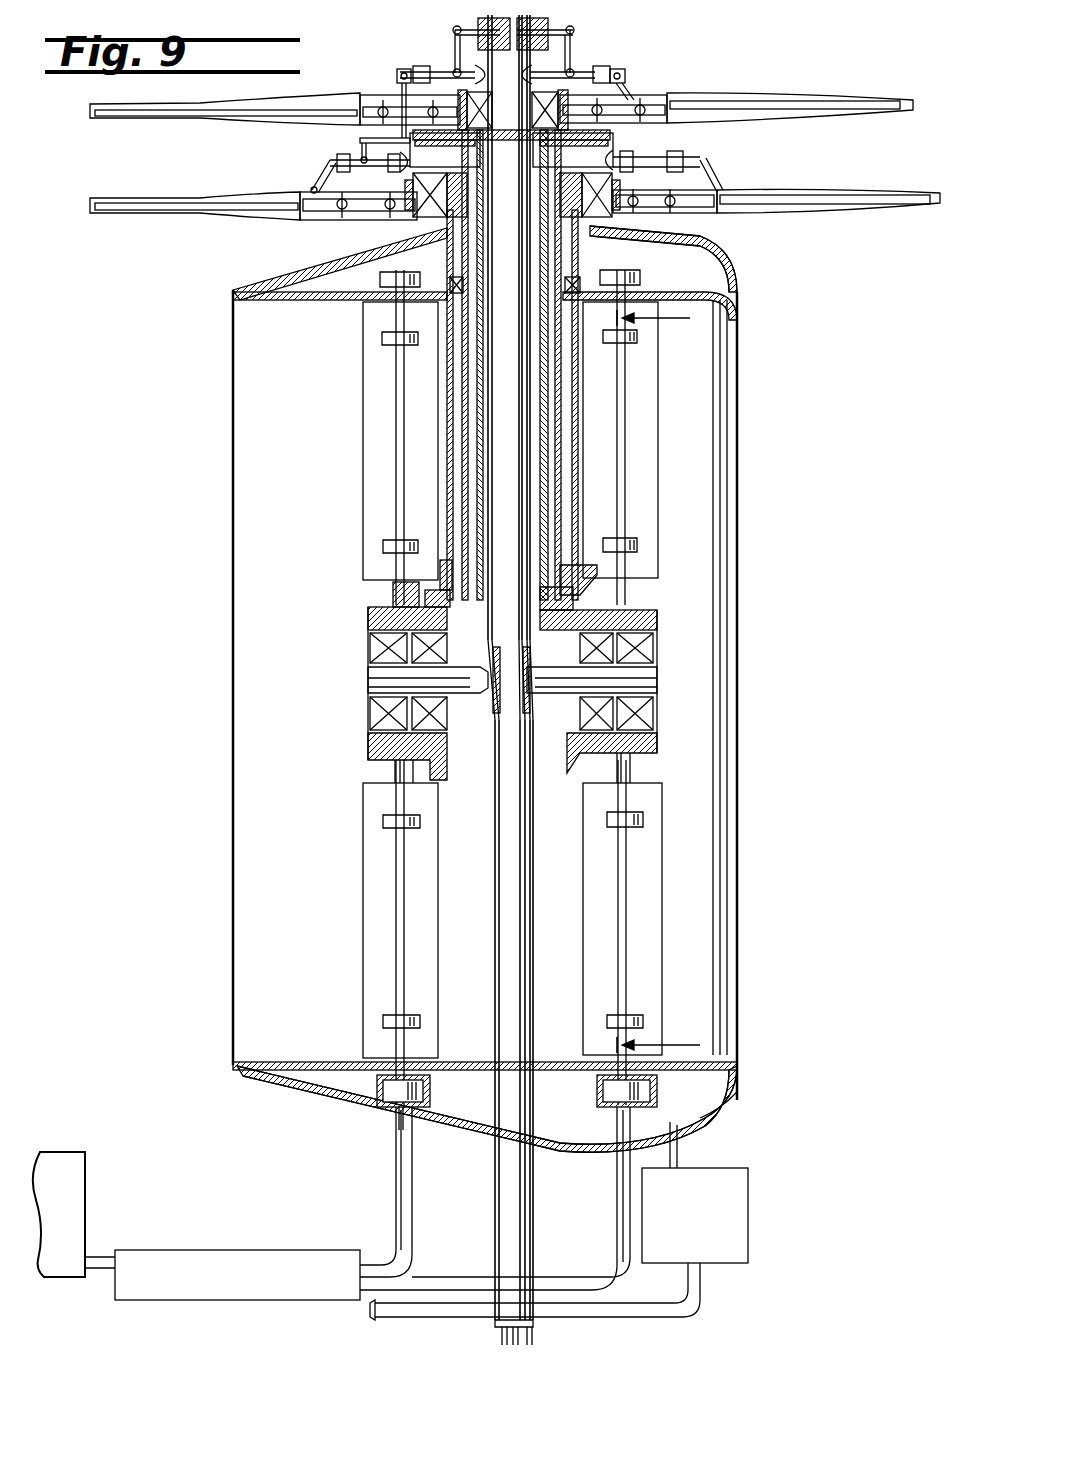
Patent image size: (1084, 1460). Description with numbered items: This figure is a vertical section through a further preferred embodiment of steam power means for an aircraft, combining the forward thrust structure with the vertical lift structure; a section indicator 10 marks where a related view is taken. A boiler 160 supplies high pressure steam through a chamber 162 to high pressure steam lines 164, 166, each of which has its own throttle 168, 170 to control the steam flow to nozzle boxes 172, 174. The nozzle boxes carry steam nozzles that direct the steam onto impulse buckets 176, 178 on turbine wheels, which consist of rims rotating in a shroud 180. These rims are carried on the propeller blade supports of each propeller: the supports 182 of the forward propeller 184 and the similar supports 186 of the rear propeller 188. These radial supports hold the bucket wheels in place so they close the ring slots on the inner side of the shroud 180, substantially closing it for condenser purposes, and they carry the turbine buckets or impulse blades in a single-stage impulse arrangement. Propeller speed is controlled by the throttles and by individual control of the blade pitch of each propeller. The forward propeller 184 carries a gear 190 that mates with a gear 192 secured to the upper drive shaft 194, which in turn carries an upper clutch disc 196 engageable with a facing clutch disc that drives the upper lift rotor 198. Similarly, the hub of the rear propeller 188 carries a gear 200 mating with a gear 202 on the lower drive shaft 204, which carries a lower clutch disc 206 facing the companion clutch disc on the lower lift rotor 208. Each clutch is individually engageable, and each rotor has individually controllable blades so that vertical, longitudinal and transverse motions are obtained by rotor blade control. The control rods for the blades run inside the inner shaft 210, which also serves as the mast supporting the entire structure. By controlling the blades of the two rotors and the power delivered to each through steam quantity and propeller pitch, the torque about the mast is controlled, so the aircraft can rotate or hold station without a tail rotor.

The section line indicator 10 is at (666, 681).
The boiler 160 is at (78, 1185).
The chamber 162 is at (235, 1289).
The high pressure steam line 164 is at (398, 1207).
The high pressure steam line 166 is at (617, 1212).
The throttle 168 is at (398, 1167).
The throttle 170 is at (617, 1177).
The nozzle box 172 is at (386, 1118).
The nozzle box 174 is at (703, 1125).
The impulse bucket 176 is at (395, 1093).
The impulse bucket 178 is at (650, 1082).
The shroud 180 is at (720, 978).
The propeller blade support 182 is at (627, 513).
The forward propeller 184 is at (662, 895).
The propeller blade support 186 is at (395, 470).
The rear propeller 188 is at (365, 925).
The gear 190 is at (592, 622).
The gear 192 is at (557, 605).
The upper drive shaft 194 is at (547, 448).
The upper clutch disc 196 is at (433, 137).
The upper lift rotor 198 is at (225, 115).
The gear 200 is at (430, 770).
The gear 202 is at (430, 592).
The lower drive shaft 204 is at (470, 520).
The lower clutch disc 206 is at (363, 145).
The lower lift rotor 208 is at (182, 213).
The inner shaft 210 is at (495, 413).